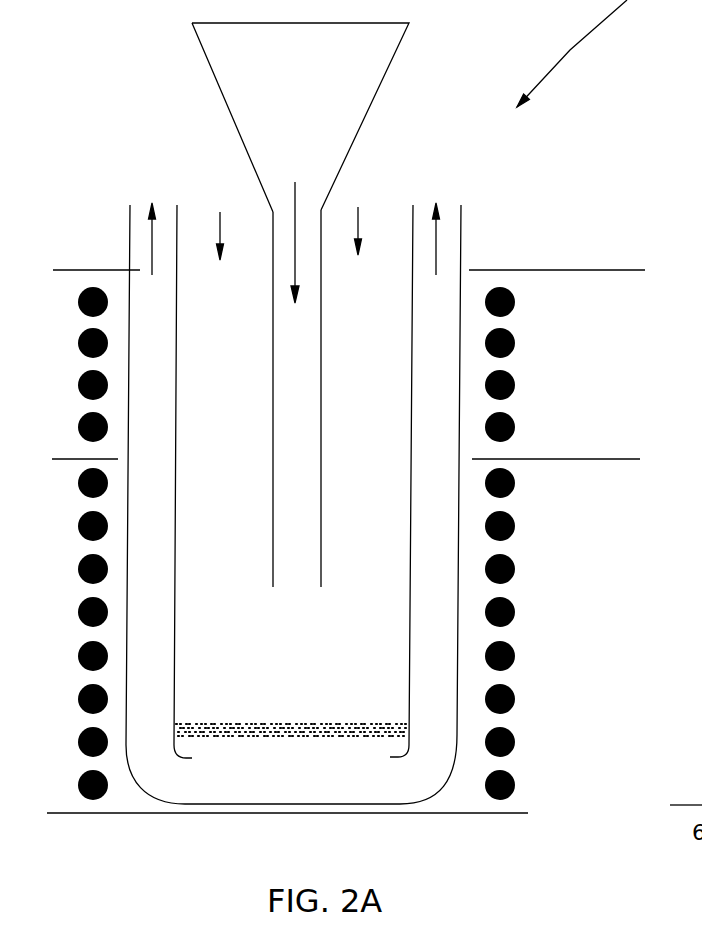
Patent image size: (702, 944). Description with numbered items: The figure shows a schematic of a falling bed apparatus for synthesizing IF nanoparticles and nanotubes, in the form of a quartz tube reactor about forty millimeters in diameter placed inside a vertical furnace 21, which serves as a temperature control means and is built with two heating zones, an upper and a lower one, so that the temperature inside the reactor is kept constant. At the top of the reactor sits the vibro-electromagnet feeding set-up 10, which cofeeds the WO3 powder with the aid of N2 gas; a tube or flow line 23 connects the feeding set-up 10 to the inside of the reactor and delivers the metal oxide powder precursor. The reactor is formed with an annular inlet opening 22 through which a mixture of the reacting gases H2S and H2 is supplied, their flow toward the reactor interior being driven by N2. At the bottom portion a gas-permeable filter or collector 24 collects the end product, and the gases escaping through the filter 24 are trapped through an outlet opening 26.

The vibro-electromagnet feeding set-up 10 is at (233, 118).
The vertical furnace 21 is at (553, 578).
The annular inlet opening 22 is at (254, 218).
The tube (flow line) 23 is at (272, 483).
The gas-permeable filter (collector) 24 is at (202, 722).
The outlet opening 26 is at (145, 212).